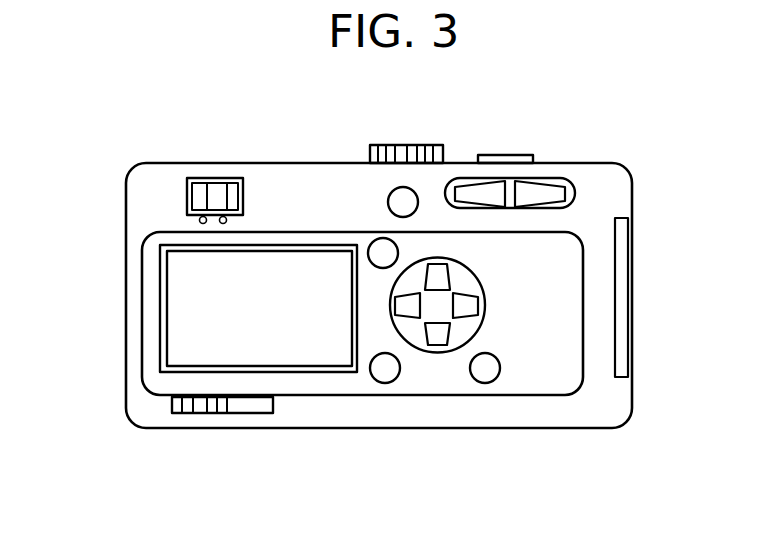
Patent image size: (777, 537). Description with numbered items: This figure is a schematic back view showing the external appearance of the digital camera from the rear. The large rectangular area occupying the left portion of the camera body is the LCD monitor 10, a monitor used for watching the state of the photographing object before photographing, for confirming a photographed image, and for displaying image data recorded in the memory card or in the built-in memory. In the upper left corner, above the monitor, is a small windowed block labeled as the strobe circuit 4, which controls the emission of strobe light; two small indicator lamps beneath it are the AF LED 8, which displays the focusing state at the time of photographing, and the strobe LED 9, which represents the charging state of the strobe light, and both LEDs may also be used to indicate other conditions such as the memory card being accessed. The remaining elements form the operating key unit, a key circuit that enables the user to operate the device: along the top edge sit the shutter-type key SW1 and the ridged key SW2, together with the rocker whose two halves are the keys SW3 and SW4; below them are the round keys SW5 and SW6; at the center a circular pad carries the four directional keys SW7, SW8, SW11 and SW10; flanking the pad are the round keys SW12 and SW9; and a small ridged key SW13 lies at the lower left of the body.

The strobe circuit 4 is at (202, 200).
The AF LED 8 is at (205, 198).
The strobe LED 9 is at (224, 198).
The LCD monitor 10 is at (183, 320).
The operating key SW1 is at (507, 155).
The operating key SW2 is at (407, 145).
The operating key SW3 is at (458, 194).
The operating key SW4 is at (562, 194).
The operating key SW5 is at (400, 200).
The operating key SW6 is at (381, 251).
The operating key SW7 is at (437, 276).
The operating key SW8 is at (470, 304).
The operating key SW9 is at (485, 373).
The operating key SW10 is at (437, 337).
The operating key SW11 is at (400, 305).
The operating key SW12 is at (385, 373).
The operating key SW13 is at (172, 405).